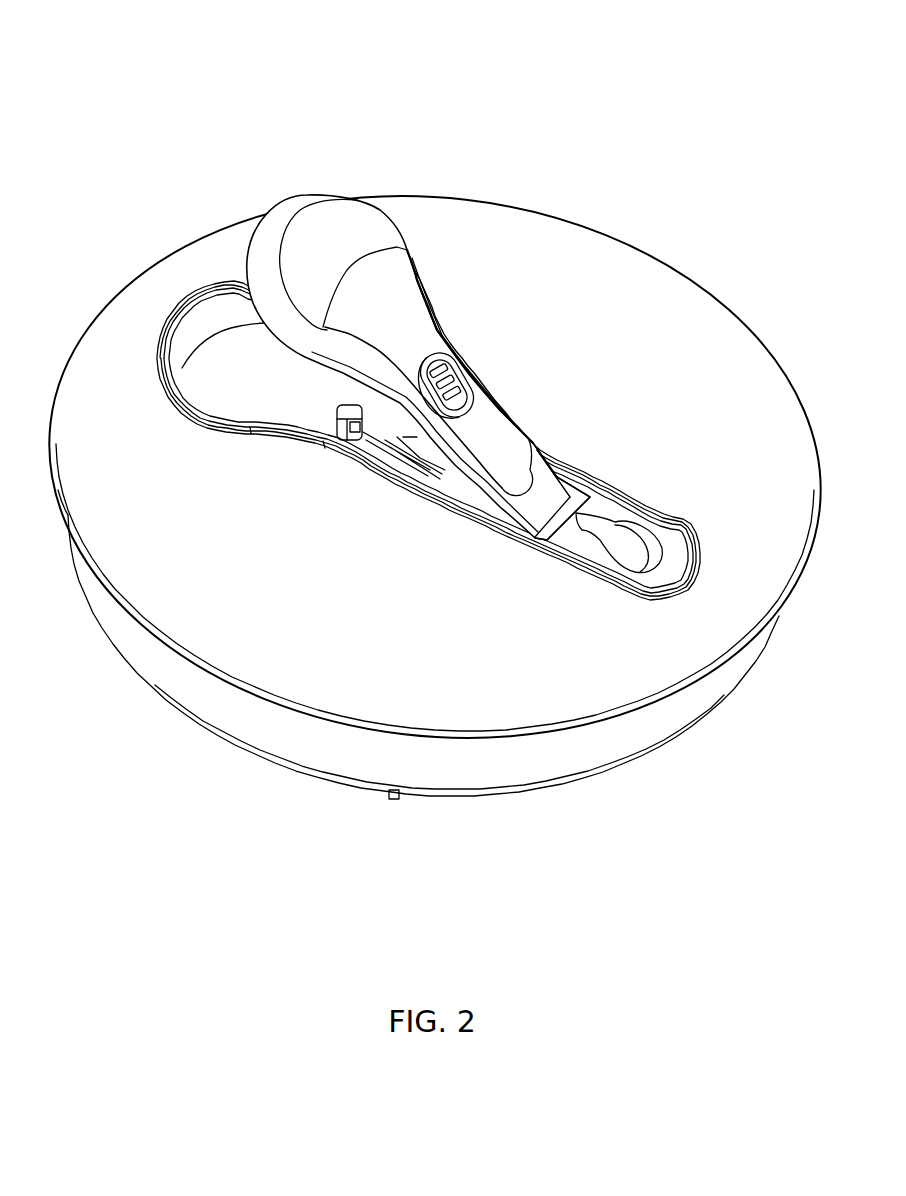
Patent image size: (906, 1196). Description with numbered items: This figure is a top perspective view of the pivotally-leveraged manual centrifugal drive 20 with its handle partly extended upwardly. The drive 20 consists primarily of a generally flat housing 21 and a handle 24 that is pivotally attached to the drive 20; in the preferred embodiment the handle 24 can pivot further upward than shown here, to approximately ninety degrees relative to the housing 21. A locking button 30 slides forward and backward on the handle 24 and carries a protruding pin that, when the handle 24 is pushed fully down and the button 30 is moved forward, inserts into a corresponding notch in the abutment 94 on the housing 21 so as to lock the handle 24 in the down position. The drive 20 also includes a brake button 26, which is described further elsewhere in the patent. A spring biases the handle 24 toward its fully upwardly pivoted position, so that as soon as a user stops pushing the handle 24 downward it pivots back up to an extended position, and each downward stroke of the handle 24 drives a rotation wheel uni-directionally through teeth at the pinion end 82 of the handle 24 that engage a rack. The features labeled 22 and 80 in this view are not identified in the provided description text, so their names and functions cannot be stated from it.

The pivotally-leveraged manual centrifugal drive 20 is at (245, 595).
The housing 21 is at (475, 600).
The recess 22 is at (416, 486).
The handle 24 is at (549, 486).
The brake button 26 is at (632, 555).
The locking button 30 is at (452, 383).
The handle 80 is at (337, 243).
The pinion end 82 is at (275, 232).
The abutment 94 is at (350, 432).